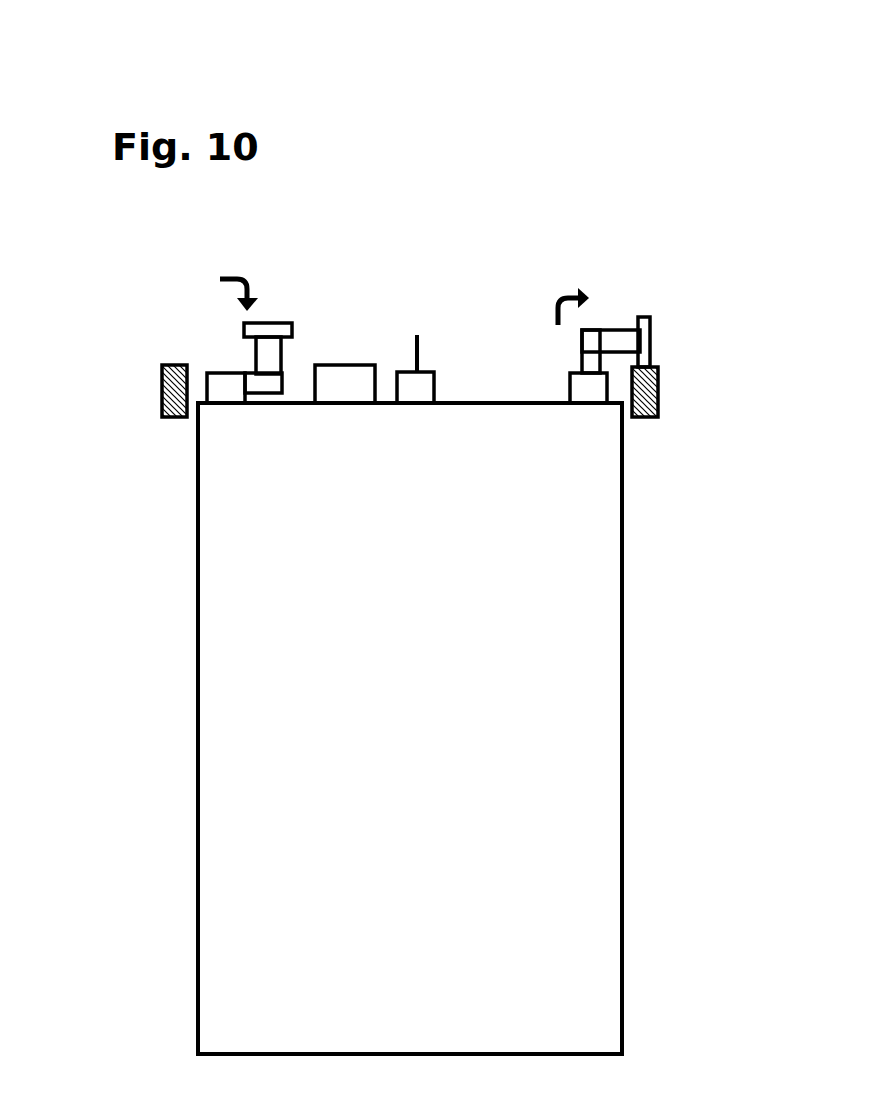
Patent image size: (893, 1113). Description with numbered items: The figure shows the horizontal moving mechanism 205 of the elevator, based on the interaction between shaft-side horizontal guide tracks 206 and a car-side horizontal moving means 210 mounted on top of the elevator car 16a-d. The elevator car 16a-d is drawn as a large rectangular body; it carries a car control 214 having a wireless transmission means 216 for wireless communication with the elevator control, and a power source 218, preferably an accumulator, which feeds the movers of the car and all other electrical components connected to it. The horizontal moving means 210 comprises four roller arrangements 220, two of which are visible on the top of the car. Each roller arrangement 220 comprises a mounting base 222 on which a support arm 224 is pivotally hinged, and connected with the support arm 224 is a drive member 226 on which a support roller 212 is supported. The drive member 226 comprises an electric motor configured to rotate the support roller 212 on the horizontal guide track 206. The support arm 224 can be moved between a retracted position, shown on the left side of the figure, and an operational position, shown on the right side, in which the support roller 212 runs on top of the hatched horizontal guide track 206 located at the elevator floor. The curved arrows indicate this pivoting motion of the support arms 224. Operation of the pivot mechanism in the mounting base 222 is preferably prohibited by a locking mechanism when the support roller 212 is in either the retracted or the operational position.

The horizontal moving mechanism 205 is at (422, 149).
The horizontal moving means 210 is at (437, 225).
The roller arrangement 220 is at (196, 331).
The support roller 212 is at (267, 325).
The drive member 226 is at (272, 357).
The wireless transmission means 216 is at (417, 335).
The car control 214 is at (417, 385).
The support arm 224 is at (263, 387).
The horizontal guide track 206 is at (163, 393).
The mounting base 222 is at (225, 395).
The power source 218 is at (348, 392).
The elevator car 16a-d is at (542, 793).